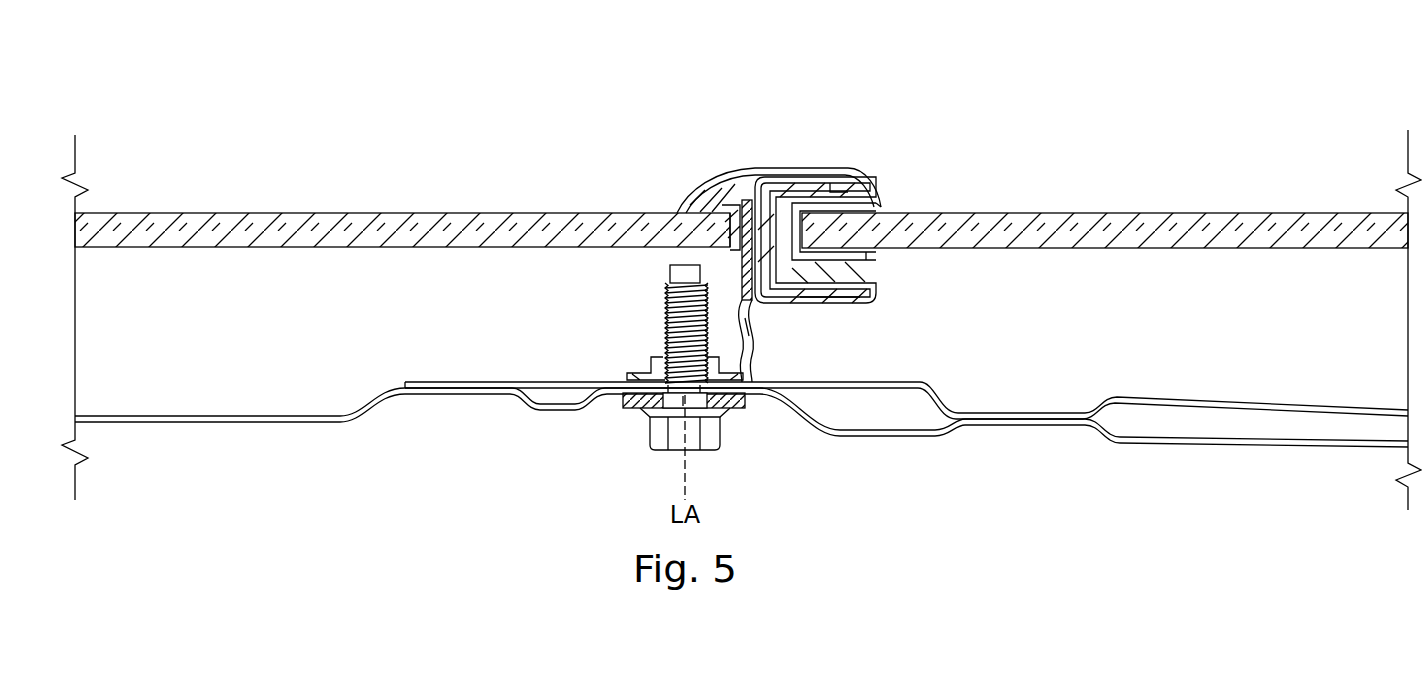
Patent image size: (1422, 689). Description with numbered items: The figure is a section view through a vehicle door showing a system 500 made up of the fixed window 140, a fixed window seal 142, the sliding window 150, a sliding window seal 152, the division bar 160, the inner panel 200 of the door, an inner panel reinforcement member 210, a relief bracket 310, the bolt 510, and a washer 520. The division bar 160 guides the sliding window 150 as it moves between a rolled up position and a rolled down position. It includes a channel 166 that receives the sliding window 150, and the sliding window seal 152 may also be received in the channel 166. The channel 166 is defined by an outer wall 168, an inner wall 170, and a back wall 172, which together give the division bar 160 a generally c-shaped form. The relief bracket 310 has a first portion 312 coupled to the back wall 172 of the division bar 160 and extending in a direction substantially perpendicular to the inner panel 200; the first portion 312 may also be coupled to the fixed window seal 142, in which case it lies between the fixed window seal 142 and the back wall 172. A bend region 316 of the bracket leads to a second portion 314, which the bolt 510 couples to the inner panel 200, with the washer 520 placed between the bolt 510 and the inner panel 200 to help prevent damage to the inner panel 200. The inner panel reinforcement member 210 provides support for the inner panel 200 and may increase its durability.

The system 500 is at (616, 79).
The fixed window 140 is at (410, 212).
The fixed window seal 142 is at (693, 205).
The sliding window 150 is at (1140, 212).
The sliding window seal 152 is at (880, 210).
The division bar 160 is at (779, 165).
The channel 166 is at (892, 257).
The outer wall 168 is at (846, 187).
The inner wall 170 is at (848, 305).
The back wall 172 is at (797, 205).
The inner panel 200 is at (912, 438).
The inner panel reinforcement member 210 is at (1240, 397).
The relief bracket 310 is at (724, 282).
The first portion 312 is at (735, 214).
The second portion 314 is at (652, 365).
The bracket bend 316 is at (758, 332).
The bolt 510 is at (660, 433).
The washer 520 is at (742, 410).